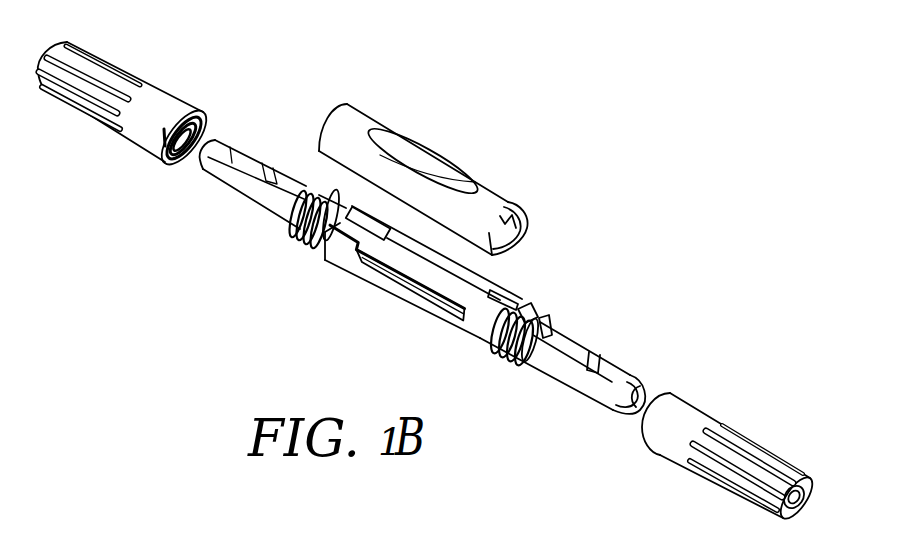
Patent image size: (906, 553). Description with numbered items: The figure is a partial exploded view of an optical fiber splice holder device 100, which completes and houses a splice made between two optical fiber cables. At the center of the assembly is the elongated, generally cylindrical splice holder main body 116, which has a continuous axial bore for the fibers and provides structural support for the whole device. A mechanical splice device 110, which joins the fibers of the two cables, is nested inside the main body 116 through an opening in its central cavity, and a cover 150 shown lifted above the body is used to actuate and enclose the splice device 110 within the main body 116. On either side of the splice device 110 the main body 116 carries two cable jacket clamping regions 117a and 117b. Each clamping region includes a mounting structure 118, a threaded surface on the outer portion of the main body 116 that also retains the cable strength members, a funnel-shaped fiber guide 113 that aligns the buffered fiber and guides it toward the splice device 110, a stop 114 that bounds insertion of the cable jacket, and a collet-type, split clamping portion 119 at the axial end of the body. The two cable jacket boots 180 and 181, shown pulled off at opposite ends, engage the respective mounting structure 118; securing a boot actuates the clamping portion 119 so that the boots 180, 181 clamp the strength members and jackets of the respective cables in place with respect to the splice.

The optical fiber splice holder device 100 is at (547, 146).
The mechanical splice device 110 is at (435, 279).
The fiber guide 113 is at (529, 323).
The stop 114 is at (591, 352).
The splice holder main body 116 is at (362, 270).
The cable jacket clamping region 117a is at (582, 385).
The cable jacket clamping region 117b is at (233, 184).
The mounting structure 118 is at (503, 355).
The clamping portion 119 is at (633, 400).
The cover 150 is at (366, 108).
The cable jacket boot 180 is at (698, 408).
The cable jacket boot 181 is at (163, 92).